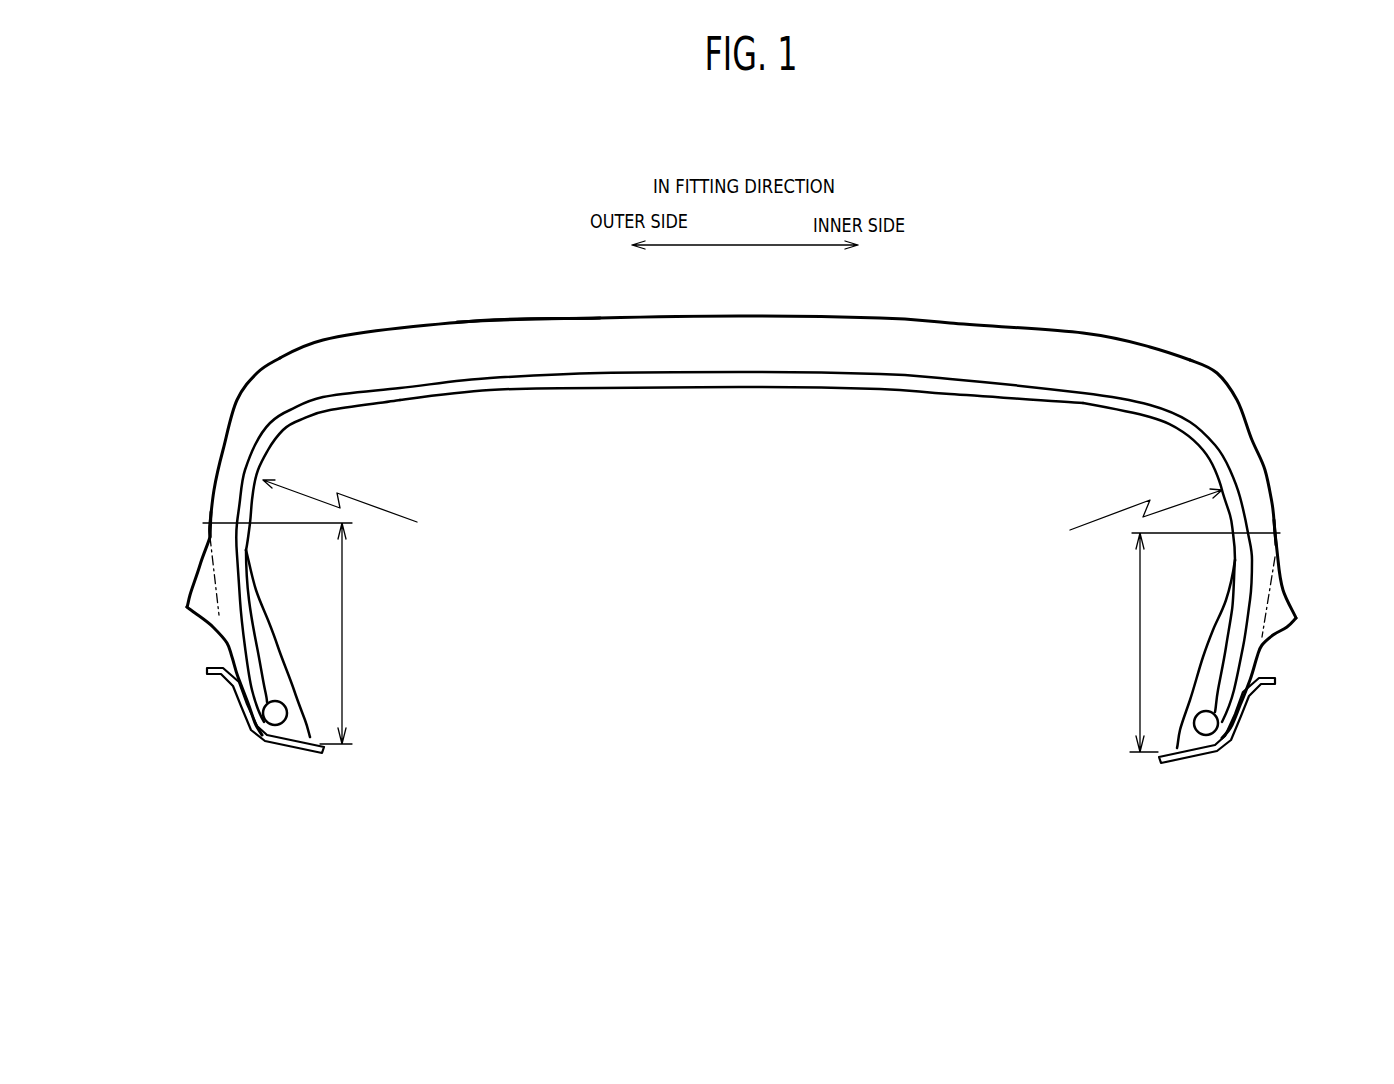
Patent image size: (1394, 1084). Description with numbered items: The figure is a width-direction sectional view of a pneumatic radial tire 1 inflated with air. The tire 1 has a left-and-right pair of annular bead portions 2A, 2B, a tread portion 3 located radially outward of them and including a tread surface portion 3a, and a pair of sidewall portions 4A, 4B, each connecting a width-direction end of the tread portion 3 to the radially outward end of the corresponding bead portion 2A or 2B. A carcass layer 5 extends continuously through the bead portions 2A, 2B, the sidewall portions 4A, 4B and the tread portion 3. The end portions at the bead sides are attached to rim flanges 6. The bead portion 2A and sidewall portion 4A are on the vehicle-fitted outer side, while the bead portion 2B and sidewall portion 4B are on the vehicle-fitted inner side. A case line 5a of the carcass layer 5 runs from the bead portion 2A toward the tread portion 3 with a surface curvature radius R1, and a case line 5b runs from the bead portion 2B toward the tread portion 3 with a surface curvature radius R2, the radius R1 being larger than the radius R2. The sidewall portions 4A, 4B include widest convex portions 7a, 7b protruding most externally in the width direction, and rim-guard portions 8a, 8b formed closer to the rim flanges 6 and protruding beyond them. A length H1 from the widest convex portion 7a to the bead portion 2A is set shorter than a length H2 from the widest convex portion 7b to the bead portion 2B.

The pneumatic radial tire 1 is at (990, 298).
The bead portion 2A is at (273, 715).
The bead portion 2B is at (1210, 723).
The tread portion 3 is at (400, 318).
The tread surface portion 3a is at (517, 318).
The sidewall portion 4A is at (220, 540).
The sidewall portion 4B is at (1263, 552).
The carcass layer 5 is at (698, 397).
The case line 5a is at (275, 433).
The case line 5b is at (1207, 445).
The rim flange 6 is at (230, 688).
The widest convex portion 7a is at (207, 523).
The widest convex portion 7b is at (1280, 533).
The rim-guard portion 8a is at (206, 607).
The rim-guard portion 8b is at (1277, 617).
The length H1 is at (293, 633).
The length H2 is at (1189, 642).
The surface curvature radius R1 is at (385, 511).
The surface curvature radius R2 is at (1107, 516).